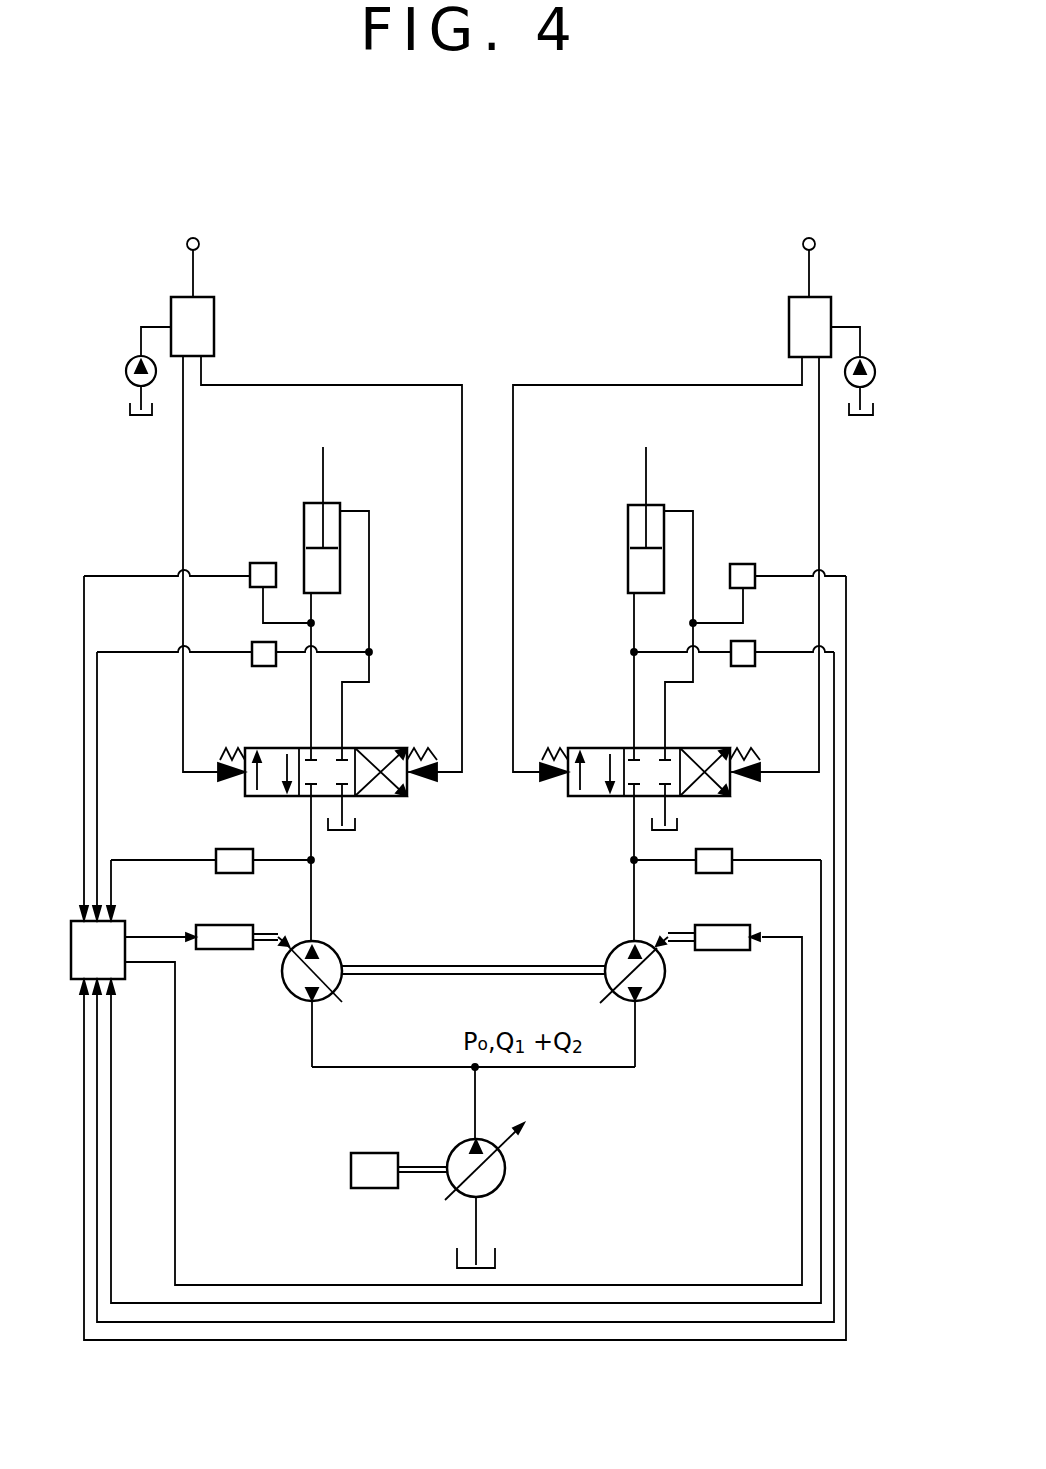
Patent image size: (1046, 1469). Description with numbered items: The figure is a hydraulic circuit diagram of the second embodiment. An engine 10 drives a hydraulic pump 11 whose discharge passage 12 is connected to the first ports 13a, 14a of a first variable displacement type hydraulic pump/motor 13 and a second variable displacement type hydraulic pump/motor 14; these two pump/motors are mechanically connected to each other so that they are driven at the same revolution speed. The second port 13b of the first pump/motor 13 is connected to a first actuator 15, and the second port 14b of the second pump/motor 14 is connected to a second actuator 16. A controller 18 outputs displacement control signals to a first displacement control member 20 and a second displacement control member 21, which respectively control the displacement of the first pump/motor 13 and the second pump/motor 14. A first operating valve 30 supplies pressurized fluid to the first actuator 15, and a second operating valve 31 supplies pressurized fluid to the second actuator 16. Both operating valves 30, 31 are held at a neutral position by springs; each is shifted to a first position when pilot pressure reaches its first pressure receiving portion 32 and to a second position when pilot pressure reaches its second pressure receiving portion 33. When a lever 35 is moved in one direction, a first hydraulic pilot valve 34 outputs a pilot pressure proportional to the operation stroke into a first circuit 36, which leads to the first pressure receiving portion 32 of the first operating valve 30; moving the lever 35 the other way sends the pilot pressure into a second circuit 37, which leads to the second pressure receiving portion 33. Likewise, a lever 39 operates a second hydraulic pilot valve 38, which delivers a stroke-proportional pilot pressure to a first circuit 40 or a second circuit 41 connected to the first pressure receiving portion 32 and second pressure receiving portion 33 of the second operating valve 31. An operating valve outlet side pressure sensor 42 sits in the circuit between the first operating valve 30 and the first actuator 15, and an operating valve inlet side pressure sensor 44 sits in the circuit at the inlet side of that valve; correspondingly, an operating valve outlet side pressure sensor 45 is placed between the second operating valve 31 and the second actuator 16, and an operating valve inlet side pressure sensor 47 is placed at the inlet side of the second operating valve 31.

The engine 10 is at (360, 1153).
The hydraulic pump 11 is at (453, 1150).
The discharge passage 12 is at (475, 1095).
The first variable displacement type hydraulic pump/motor 13 is at (418, 992).
The first port 13a is at (312, 1002).
The second port 13b is at (320, 943).
The second variable displacement type hydraulic pump/motor 14 is at (643, 992).
The first port 14a is at (637, 1002).
The second port 14b is at (630, 943).
The first actuator 15 is at (342, 503).
The second actuator 16 is at (628, 505).
The controller 18 is at (125, 927).
The first displacement control member 20 is at (257, 922).
The second displacement control member 21 is at (737, 925).
The first operating valve 30 is at (397, 748).
The second operating valve 31 is at (728, 748).
The first pressure receiving portion 32 is at (217, 766).
The second pressure receiving portion 33 is at (437, 766).
The first hydraulic pilot valve 34 is at (214, 340).
The lever 35 is at (200, 247).
The first circuit 36 is at (183, 470).
The second circuit 37 is at (266, 385).
The second hydraulic pilot valve 38 is at (789, 345).
The lever 39 is at (803, 246).
The first circuit 40 is at (692, 385).
The second circuit 41 is at (819, 440).
The operating valve outlet side pressure sensor 42 is at (262, 563).
The operating valve inlet side pressure sensor 44 is at (227, 849).
The operating valve outlet side pressure sensor 45 is at (740, 564).
The operating valve inlet side pressure sensor 47 is at (722, 849).